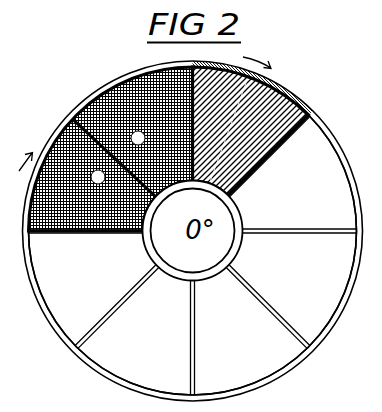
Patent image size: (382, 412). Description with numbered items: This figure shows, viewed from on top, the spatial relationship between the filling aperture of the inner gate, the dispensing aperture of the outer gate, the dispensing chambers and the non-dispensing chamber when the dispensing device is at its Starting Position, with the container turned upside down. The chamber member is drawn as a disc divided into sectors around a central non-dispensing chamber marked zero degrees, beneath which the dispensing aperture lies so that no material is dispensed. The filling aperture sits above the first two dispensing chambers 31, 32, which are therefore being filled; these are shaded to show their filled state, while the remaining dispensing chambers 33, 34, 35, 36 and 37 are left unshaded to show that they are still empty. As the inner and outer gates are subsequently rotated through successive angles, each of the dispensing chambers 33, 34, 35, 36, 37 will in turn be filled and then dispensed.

The first dispensing chamber 31 is at (222, 122).
The second dispensing chamber 32 is at (253, 131).
The dispensing chamber 33 is at (291, 172).
The dispensing chamber 34 is at (300, 288).
The dispensing chamber 35 is at (251, 330).
The dispensing chamber 36 is at (136, 338).
The dispensing chamber 37 is at (93, 288).